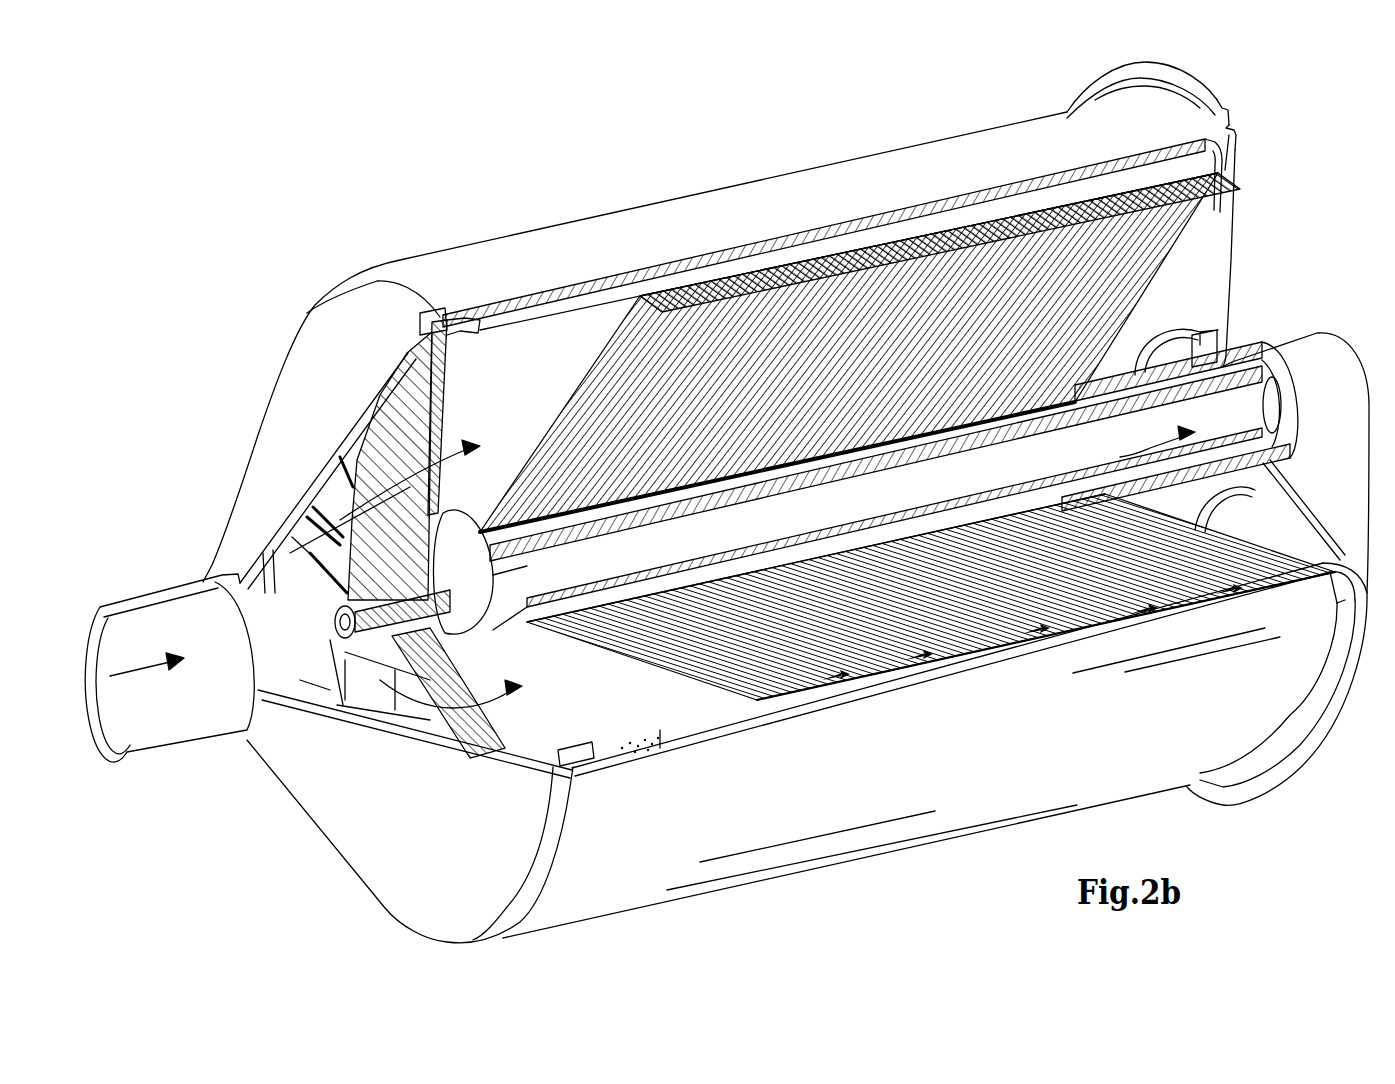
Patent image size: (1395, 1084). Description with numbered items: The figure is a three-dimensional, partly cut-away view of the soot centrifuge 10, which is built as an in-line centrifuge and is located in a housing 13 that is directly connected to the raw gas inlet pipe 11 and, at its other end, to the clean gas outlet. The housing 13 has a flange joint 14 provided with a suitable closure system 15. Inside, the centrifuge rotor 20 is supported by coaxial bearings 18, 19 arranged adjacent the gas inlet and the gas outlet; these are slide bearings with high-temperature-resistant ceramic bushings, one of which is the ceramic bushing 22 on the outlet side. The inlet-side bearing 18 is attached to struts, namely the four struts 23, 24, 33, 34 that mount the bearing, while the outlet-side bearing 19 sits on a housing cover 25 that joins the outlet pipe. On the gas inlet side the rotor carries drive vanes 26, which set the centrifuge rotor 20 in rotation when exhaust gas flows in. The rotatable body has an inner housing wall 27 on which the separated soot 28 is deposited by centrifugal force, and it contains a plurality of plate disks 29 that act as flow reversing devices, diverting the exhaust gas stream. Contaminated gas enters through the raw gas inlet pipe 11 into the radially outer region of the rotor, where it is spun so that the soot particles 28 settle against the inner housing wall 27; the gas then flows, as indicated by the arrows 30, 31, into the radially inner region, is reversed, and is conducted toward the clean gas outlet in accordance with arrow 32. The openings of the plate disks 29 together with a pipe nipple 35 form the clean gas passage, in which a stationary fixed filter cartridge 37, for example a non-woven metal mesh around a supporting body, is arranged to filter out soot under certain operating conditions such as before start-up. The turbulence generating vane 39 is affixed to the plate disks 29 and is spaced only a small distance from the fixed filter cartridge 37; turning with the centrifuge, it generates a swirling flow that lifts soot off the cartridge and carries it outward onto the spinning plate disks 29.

The soot centrifuge 10 is at (545, 213).
The raw gas inlet pipe 11 is at (157, 627).
The housing 13 is at (838, 182).
The flange joint 14 is at (1232, 106).
The closure system 15 is at (1236, 124).
The bearing 18 is at (336, 646).
The bearing 19 is at (1258, 496).
The centrifuge rotor 20 is at (604, 742).
The ceramic bushing 22 is at (1226, 367).
The strut 23 is at (365, 700).
The strut 24 is at (378, 412).
The housing cover 25 is at (1236, 226).
The drive vanes 26 is at (405, 425).
The inner housing wall 27 is at (704, 735).
The soot 28 is at (636, 735).
The plate disks 29 is at (773, 290).
The arrow 30 is at (831, 305).
The arrow 31 is at (952, 664).
The arrow 32 is at (1186, 405).
The strut 33 is at (293, 545).
The strut 34 is at (485, 738).
The pipe nipple 35 is at (1088, 500).
The filter cartridge 37 is at (993, 505).
The vane 39 is at (877, 462).